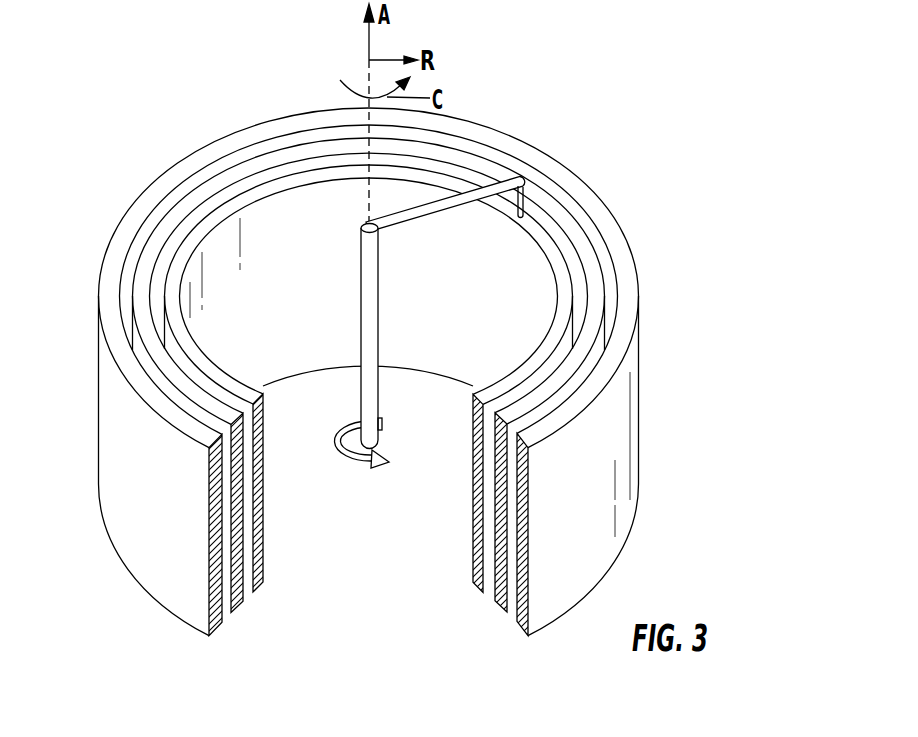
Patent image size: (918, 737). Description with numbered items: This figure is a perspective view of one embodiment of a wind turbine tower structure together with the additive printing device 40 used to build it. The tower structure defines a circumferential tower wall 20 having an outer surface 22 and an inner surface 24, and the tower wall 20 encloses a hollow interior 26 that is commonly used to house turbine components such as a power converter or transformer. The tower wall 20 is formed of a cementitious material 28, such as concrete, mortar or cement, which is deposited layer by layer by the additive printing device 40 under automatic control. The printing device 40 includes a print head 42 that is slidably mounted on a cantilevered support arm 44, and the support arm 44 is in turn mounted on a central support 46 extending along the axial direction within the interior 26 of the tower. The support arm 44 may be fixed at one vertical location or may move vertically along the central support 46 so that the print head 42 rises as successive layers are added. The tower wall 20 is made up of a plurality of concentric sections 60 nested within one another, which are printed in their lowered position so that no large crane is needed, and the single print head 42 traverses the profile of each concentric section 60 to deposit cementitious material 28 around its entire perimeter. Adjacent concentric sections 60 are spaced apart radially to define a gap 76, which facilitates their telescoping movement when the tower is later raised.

The circumferential tower wall 20 is at (437, 378).
The outer surface 22 is at (498, 487).
The inner surface 24 is at (464, 488).
The hollow interior 26 is at (440, 421).
The cementitious material 28 is at (528, 563).
The additive printing device 40 is at (421, 190).
The print head 42 is at (530, 200).
The cantilevered support arm 44 is at (453, 205).
The central support 46 is at (362, 314).
The concentric sections 60 is at (256, 538).
The gap 76 is at (500, 627).